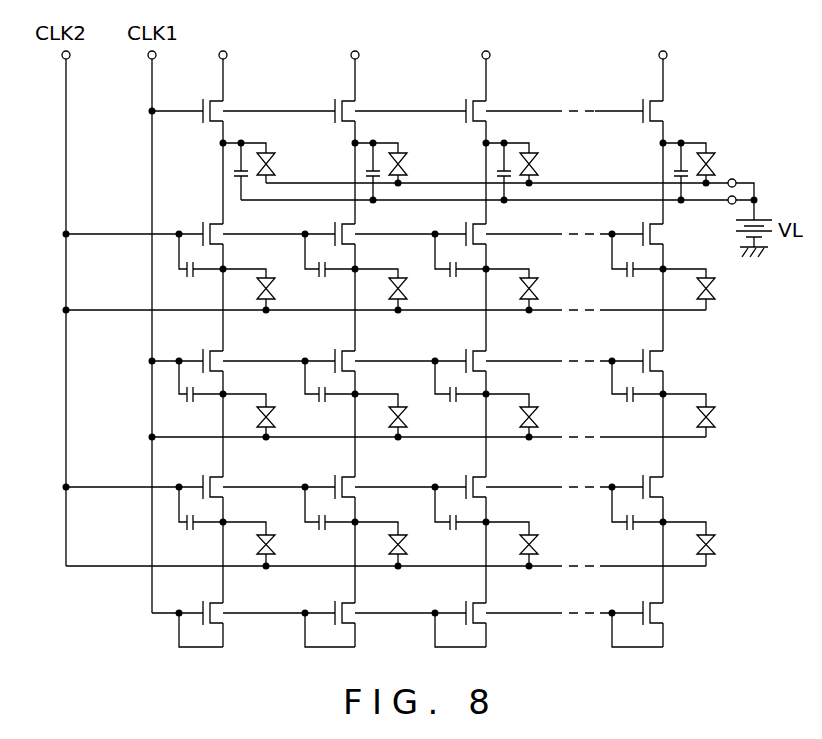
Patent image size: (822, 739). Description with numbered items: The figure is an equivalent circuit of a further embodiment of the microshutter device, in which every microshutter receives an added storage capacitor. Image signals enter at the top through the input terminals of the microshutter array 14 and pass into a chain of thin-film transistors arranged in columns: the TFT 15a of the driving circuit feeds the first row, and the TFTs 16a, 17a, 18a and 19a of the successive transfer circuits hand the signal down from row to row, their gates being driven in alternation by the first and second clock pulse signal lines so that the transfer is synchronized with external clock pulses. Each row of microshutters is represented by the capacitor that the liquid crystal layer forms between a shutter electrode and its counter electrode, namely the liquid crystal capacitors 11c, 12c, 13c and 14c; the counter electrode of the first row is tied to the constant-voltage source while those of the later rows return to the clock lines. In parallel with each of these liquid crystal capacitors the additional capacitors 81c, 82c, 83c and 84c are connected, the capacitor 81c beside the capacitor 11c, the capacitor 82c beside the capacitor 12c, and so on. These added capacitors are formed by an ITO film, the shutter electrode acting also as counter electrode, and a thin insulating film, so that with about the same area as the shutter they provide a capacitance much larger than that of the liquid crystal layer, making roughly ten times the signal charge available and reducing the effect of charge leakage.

The microshutter array 14 is at (445, 61).
The TFT 15a is at (454, 105).
The TFT 16a is at (454, 228).
The TFT 17a is at (454, 355).
The TFT 18a is at (454, 480).
The TFT 19a is at (442, 618).
The capacitor due to liquid crystal 11c is at (493, 161).
The capacitor due to liquid crystal 12c is at (491, 289).
The capacitor due to liquid crystal 13c is at (491, 415).
The capacitor due to liquid crystal 14c is at (491, 544).
The additional capacitor 81c is at (678, 166).
The additional capacitor 82c is at (418, 269).
The additional capacitor 83c is at (417, 395).
The additional capacitor 84c is at (417, 522).